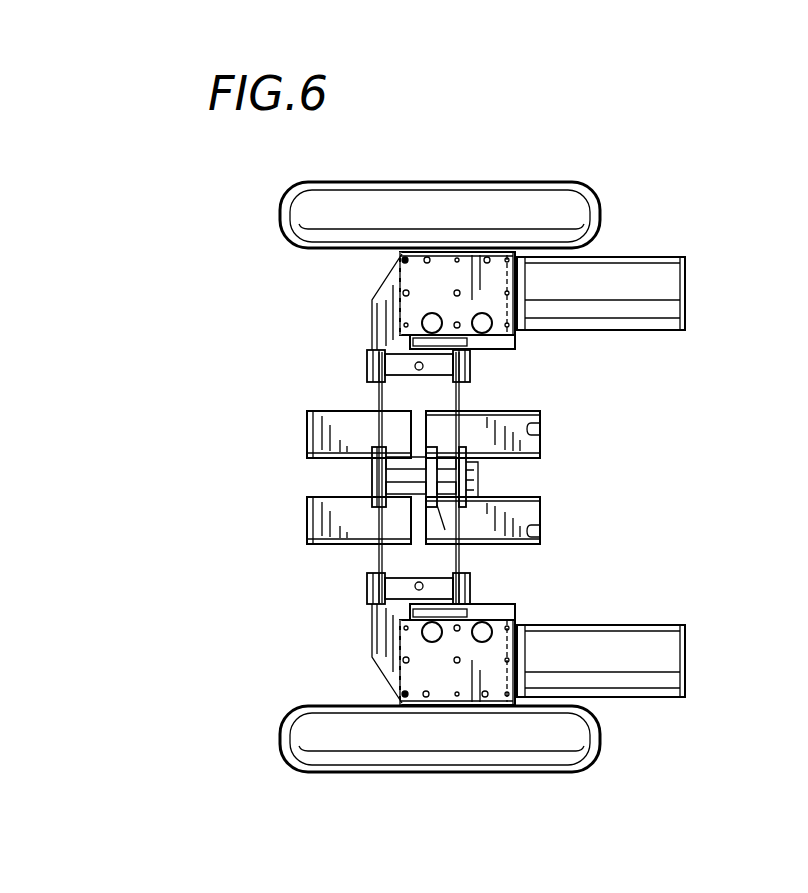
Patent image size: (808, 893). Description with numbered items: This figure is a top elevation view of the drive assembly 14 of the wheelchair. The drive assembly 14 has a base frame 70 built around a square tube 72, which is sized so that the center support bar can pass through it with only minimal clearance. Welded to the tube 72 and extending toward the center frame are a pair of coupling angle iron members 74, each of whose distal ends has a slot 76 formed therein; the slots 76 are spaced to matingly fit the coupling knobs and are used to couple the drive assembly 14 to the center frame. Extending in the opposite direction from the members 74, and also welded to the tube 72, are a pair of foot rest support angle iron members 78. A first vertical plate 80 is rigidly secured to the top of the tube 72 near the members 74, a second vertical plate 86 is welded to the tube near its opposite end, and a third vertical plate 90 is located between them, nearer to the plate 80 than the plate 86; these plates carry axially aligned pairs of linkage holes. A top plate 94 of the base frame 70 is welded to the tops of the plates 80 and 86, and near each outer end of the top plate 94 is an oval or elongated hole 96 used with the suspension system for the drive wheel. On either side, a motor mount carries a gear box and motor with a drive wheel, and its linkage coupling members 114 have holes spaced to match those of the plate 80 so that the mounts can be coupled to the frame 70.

The drive assembly 14 is at (376, 243).
The base frame 70 is at (404, 477).
The square tube 72 is at (475, 478).
The coupling angle iron members 74 is at (544, 478).
The slot 76 is at (544, 428).
The foot rest support angle iron members 78 is at (307, 415).
The first vertical plate 80 is at (465, 446).
The second vertical plate 86 is at (372, 450).
The third vertical plate 90 is at (445, 530).
The top plate 94 is at (386, 552).
The elongated hole 96 is at (415, 363).
The linkage coupling members 114 is at (366, 364).